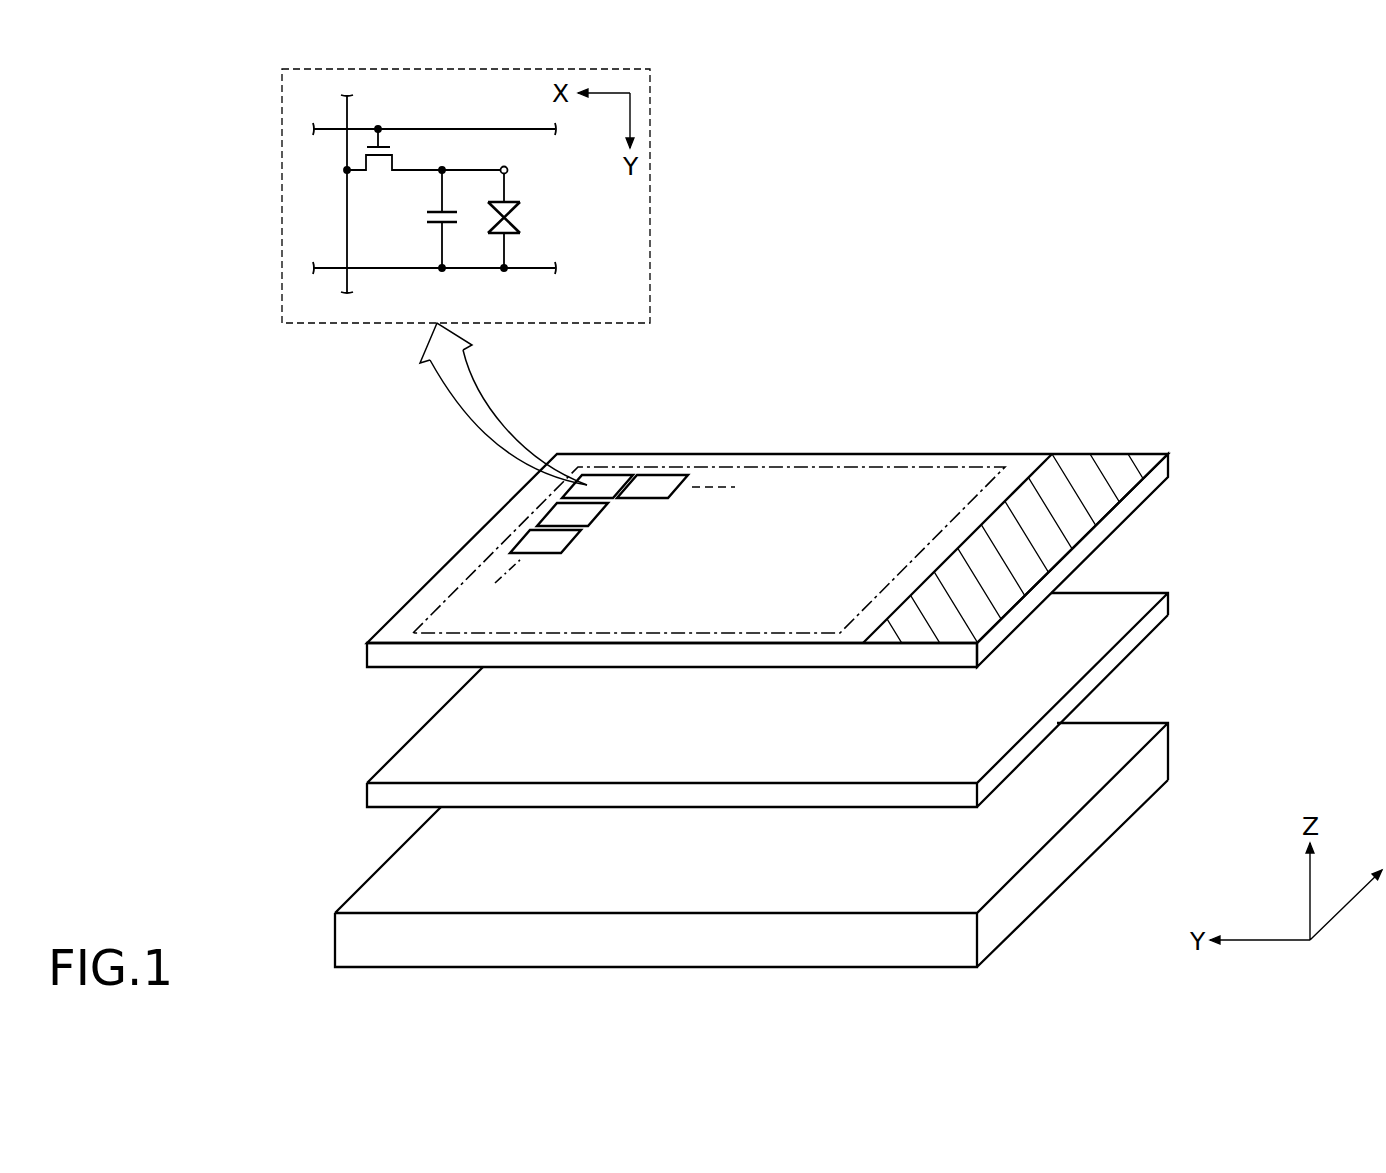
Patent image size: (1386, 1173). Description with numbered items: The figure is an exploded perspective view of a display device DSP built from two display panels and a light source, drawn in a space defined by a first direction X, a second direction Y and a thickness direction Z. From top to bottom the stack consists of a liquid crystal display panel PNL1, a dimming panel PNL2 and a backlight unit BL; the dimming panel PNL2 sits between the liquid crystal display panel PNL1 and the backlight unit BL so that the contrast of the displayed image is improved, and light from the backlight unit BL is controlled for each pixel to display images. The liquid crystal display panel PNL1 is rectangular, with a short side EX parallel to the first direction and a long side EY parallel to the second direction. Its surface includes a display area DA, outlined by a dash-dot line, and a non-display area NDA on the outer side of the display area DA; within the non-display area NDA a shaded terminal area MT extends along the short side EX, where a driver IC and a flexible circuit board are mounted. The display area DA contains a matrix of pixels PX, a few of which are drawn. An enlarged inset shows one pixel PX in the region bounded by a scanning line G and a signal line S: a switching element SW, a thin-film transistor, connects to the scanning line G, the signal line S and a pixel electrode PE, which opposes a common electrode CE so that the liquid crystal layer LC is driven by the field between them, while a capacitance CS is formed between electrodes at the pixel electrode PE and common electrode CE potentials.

The display device DSP is at (421, 500).
The liquid crystal display panel PNL1 is at (754, 567).
The dimming panel PNL2 is at (365, 795).
The backlight unit BL is at (335, 940).
The display area DA is at (745, 467).
The non-display area NDA is at (917, 460).
The terminal area MT is at (1083, 465).
The short side EX is at (1145, 492).
The long side EY is at (720, 661).
The pixel PX is at (651, 121).
The scanning line G is at (331, 128).
The signal line S is at (347, 213).
The switching element SW is at (405, 157).
The capacitance CS is at (425, 217).
The liquid crystal layer LC is at (518, 215).
The pixel electrode PE is at (508, 170).
The common electrode CE is at (528, 268).